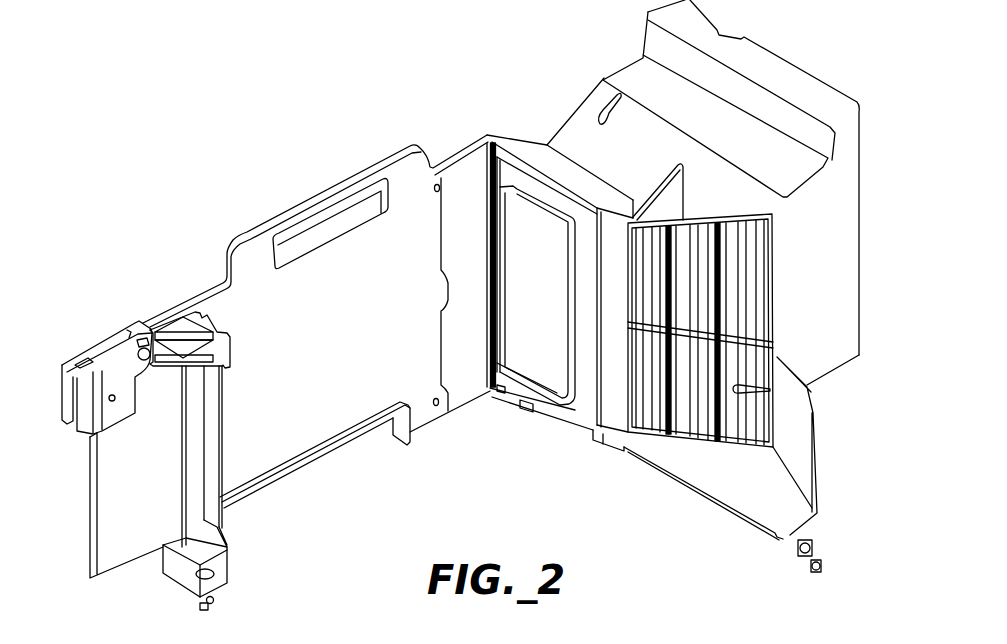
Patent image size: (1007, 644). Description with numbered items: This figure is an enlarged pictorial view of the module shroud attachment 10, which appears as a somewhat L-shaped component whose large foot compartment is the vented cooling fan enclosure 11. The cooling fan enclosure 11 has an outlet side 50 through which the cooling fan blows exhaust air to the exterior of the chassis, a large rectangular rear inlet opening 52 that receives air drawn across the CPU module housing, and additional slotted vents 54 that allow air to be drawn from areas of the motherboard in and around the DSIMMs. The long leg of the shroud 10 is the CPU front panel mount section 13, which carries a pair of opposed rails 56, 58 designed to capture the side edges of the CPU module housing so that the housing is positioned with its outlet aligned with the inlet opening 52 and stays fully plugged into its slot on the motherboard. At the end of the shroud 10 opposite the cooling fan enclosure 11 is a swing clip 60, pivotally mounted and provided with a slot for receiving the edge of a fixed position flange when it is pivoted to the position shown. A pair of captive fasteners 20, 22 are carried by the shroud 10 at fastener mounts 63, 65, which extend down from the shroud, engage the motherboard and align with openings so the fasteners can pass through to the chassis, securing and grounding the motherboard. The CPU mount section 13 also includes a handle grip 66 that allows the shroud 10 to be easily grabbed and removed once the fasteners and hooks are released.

The module shroud attachment 10 is at (563, 115).
The vented cooling fan enclosure 11 is at (800, 60).
The CPU front panel mount section 13 is at (205, 290).
The captive fastener 20 is at (203, 606).
The captive fastener 22 is at (808, 570).
The outlet side 50 is at (827, 313).
The rear inlet opening 52 is at (525, 315).
The slotted vents 54 is at (685, 458).
The rail 56 is at (500, 213).
The rail 58 is at (221, 430).
The swing clip 60 is at (43, 370).
The fastener mount 63 is at (214, 600).
The fastener mount 65 is at (818, 562).
The handle grip 66 is at (297, 190).